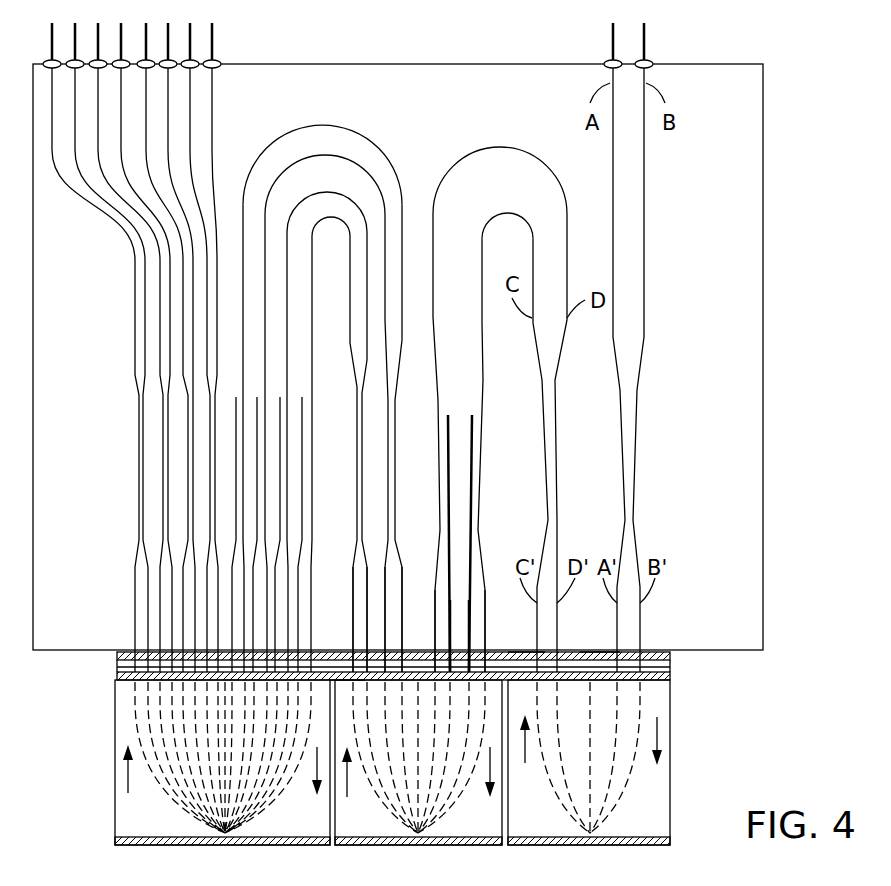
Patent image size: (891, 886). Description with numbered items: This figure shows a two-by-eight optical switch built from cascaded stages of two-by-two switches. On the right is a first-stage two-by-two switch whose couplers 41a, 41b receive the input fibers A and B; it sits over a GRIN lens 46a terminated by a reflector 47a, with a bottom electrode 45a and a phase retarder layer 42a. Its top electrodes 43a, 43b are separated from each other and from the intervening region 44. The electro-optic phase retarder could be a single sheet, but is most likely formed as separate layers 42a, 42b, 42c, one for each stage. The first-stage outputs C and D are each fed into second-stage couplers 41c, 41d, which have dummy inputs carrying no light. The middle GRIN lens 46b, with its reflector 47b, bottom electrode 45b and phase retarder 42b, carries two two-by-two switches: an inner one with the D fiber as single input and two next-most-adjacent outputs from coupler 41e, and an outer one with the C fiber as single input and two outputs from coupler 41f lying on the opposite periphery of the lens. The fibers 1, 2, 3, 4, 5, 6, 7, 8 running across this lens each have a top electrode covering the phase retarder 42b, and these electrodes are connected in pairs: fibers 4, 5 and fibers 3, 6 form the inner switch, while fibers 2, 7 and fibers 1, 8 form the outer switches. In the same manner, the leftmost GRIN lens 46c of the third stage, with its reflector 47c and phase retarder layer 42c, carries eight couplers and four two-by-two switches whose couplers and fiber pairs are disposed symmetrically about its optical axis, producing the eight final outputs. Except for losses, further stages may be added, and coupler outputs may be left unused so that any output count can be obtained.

The fiber 1 is at (487, 607).
The fiber 2 is at (470, 593).
The fiber 3 is at (452, 628).
The fiber 4 is at (437, 593).
The fiber 5 is at (402, 630).
The fiber 6 is at (385, 593).
The fiber 7 is at (367, 630).
The fiber 8 is at (353, 593).
The coupler 41a is at (633, 475).
The coupler 41b is at (557, 475).
The coupler 41c is at (480, 475).
The coupler 41d is at (437, 455).
The coupler 41e is at (393, 458).
The coupler 41f is at (357, 458).
The phase retarder layer 42a is at (672, 667).
The phase retarder 42b is at (423, 663).
The phase retarder layer 42c is at (118, 666).
The electrode 43a is at (670, 653).
The electrode 43b is at (520, 652).
The electrode separation region 44 is at (600, 652).
The bottom electrode 45a is at (670, 678).
The bottom electrode 45b is at (345, 673).
The GRIN lens 46a is at (662, 832).
The middle GRIN lens 46b is at (495, 832).
The leftmost GRIN lens 46c is at (318, 831).
The reflector 47a is at (572, 836).
The reflector 47b is at (400, 836).
The reflector 47c is at (188, 837).